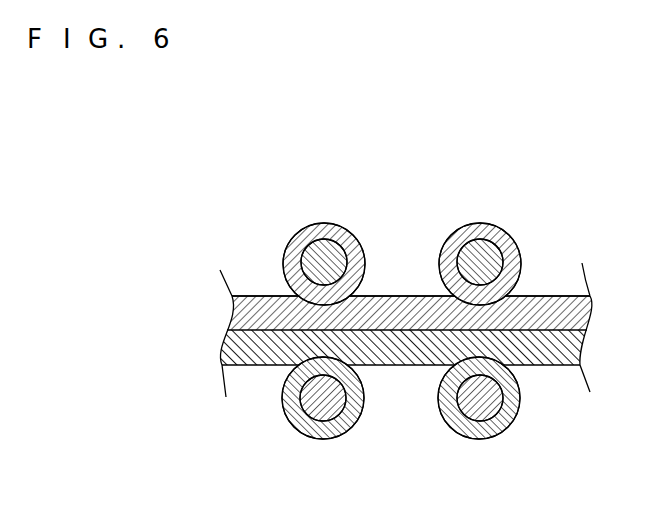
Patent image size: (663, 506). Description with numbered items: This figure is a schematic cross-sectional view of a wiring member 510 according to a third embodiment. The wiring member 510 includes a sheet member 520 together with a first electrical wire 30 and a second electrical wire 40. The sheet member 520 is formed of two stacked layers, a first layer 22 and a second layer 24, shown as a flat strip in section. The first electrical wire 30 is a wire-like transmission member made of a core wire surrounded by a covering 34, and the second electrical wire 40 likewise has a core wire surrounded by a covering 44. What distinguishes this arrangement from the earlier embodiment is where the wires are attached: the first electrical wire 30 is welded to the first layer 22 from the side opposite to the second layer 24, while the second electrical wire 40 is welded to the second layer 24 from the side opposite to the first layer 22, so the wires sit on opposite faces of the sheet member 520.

The wiring member 510 is at (440, 153).
The sheet member 520 is at (551, 296).
The first layer 22 is at (590, 313).
The second layer 24 is at (580, 347).
The first electrical wire 30 is at (324, 223).
The covering 34 is at (358, 243).
The second electrical wire 40 is at (322, 440).
The covering 44 is at (360, 416).